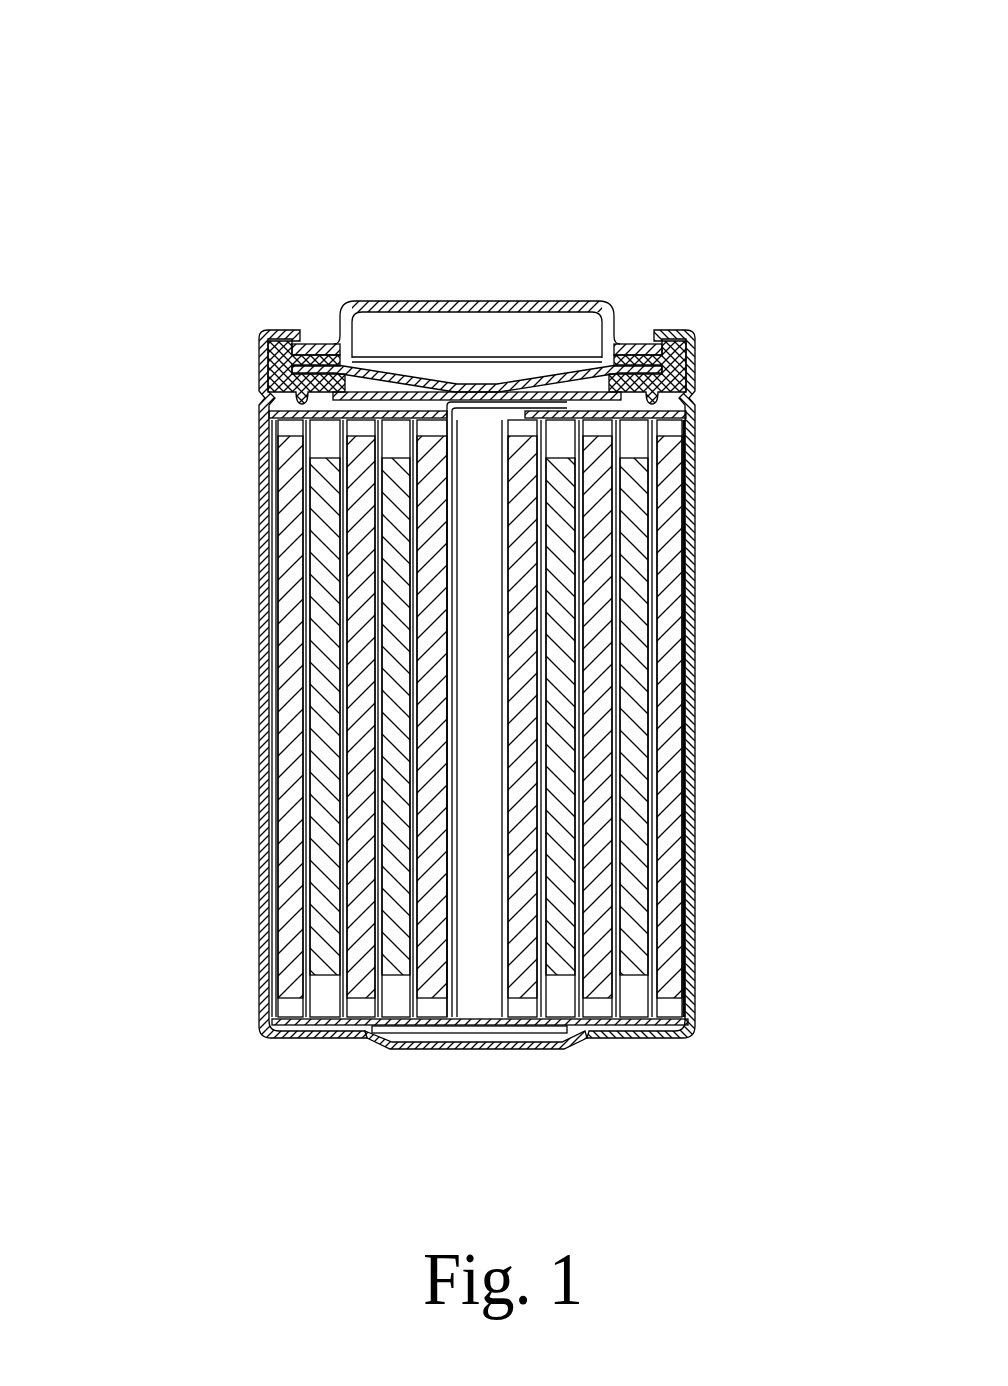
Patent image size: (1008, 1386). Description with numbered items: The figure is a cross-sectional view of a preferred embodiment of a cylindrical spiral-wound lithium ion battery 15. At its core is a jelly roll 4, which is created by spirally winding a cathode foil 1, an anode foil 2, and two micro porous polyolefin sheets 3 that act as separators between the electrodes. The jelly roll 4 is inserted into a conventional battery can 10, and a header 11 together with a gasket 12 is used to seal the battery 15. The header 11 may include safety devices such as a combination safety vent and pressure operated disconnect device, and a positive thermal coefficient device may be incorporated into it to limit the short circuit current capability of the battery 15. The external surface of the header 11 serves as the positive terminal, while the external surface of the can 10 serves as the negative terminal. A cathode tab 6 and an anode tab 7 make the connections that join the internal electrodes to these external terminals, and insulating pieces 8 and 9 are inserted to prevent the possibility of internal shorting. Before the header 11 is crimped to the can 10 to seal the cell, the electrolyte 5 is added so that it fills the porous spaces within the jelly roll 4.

The cathode foil 1 is at (635, 815).
The anode foil 2 is at (290, 818).
The micro porous polyolefin sheets 3 is at (298, 725).
The jelly roll 4 is at (262, 420).
The electrolyte 5 is at (600, 718).
The cathode tab 6 is at (473, 420).
The anode tab 7 is at (388, 1048).
The insulating piece 8 is at (262, 334).
The insulating piece 9 is at (572, 1035).
The battery can 10 is at (700, 548).
The header 11 is at (437, 298).
The gasket 12 is at (692, 337).
The battery 15 is at (648, 172).